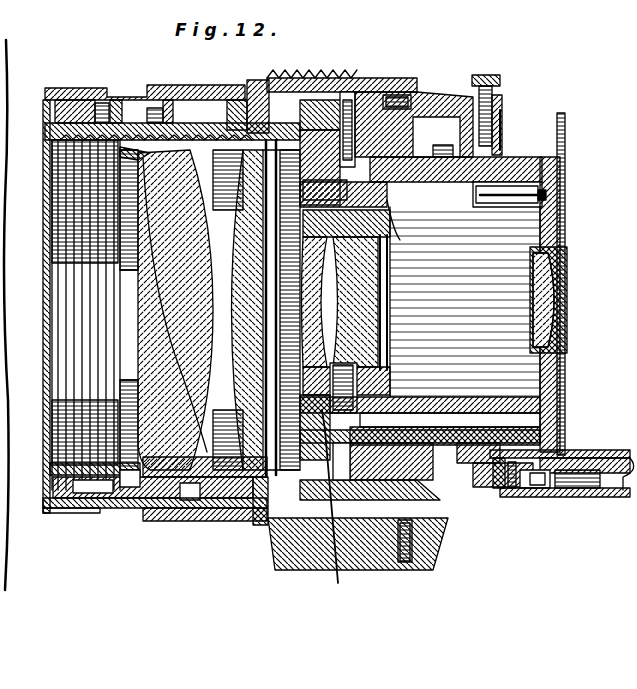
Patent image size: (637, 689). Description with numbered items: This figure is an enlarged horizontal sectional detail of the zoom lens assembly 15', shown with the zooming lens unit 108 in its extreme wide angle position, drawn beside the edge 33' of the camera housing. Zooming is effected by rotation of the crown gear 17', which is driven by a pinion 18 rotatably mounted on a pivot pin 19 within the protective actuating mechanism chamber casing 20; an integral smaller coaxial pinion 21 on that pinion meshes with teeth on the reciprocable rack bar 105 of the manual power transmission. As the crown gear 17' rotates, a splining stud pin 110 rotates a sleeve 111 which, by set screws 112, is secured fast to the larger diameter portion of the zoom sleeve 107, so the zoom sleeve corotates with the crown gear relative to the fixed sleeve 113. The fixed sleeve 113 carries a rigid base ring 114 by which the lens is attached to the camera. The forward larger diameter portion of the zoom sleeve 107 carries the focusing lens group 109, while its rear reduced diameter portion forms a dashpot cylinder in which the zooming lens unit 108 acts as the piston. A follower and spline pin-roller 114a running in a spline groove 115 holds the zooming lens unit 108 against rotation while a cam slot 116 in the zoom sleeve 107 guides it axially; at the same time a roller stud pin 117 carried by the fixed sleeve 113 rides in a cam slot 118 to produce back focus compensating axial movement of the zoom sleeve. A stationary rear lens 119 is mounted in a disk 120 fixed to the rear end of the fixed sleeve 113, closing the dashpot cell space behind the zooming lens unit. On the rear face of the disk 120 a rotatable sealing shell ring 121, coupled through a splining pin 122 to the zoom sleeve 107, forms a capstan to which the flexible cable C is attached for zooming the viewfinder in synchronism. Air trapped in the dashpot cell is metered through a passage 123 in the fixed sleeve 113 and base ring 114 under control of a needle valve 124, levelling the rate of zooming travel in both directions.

The sleeve 111 is at (245, 105).
The splining stud pin 110 is at (350, 92).
The crown gear 17' is at (428, 301).
The base ring 114 is at (432, 97).
The needle valve 124 is at (493, 76).
The passage 123 is at (500, 130).
The fixed sleeve 113 is at (548, 150).
The flexible cable C is at (565, 118).
The disk 120 is at (558, 166).
The sealing shell ring 121 is at (560, 186).
The splining pin 122 is at (546, 200).
The bellows edge 33' is at (21, 218).
The focusing lens group 109 is at (125, 349).
The cam slot 118 is at (385, 185).
The roller stud pin 117 is at (415, 187).
The zooming lens unit 108 is at (400, 320).
The cam slot 116 is at (385, 420).
The spline groove 115 is at (450, 412).
The zoom sleeve 107 is at (437, 397).
The rear lens 119 is at (550, 318).
The rack bar 105 is at (625, 478).
The zoom lens assembly 15' is at (155, 511).
The set screws 112 is at (256, 520).
The follower and spline pin-roller 114a is at (358, 508).
The pinion 18 is at (500, 497).
The pivot pin 19 is at (514, 492).
The coaxial pinion 21 is at (547, 492).
The actuating mechanism chamber casing 20 is at (620, 497).